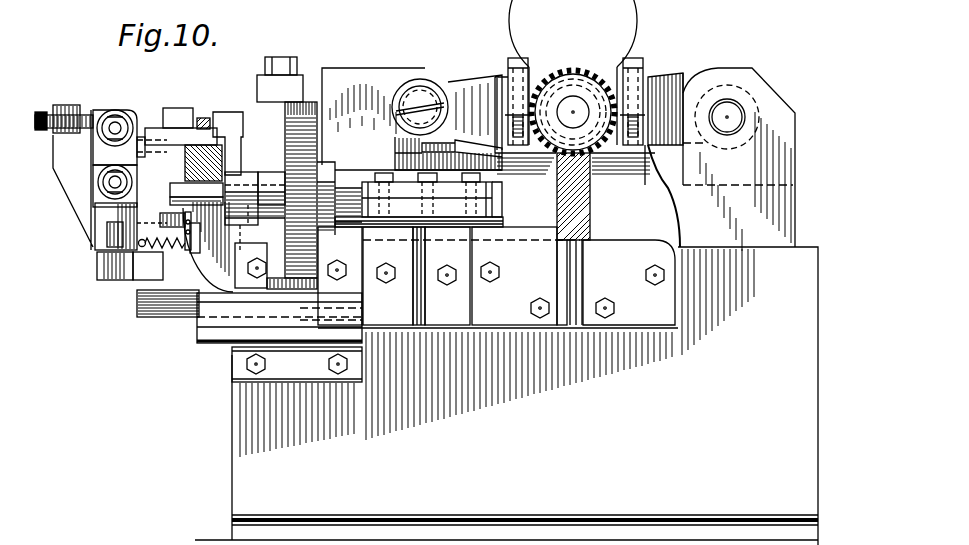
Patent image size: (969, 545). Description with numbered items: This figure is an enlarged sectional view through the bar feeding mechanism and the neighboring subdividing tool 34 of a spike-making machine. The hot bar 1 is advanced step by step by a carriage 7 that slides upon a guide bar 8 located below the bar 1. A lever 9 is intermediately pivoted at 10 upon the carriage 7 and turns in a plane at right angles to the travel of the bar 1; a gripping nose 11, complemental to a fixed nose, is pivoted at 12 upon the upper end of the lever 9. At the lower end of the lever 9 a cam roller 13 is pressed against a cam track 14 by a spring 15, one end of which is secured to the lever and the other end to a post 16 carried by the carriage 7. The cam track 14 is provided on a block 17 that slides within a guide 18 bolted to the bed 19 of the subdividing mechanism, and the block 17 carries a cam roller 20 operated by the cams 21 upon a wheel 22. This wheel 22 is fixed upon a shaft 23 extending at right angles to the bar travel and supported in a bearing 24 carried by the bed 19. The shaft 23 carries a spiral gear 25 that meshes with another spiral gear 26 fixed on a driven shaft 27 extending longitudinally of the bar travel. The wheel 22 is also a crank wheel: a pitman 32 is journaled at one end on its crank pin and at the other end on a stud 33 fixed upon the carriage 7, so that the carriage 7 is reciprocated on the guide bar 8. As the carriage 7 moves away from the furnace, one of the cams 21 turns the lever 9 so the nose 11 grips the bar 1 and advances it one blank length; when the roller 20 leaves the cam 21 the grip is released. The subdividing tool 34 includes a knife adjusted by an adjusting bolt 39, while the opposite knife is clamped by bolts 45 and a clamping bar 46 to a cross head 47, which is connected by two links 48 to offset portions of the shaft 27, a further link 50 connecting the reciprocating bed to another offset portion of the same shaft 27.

The bar 1 is at (203, 117).
The carriage 7 is at (113, 207).
The guide bar 8 is at (216, 185).
The lever 9 is at (103, 152).
The pivot 10 is at (110, 185).
The gripping nose 11 is at (183, 108).
The pivot 12 is at (111, 110).
The cam roller 13 is at (97, 263).
The cam track 14 is at (137, 280).
The spring 15 is at (173, 250).
The post 16 is at (195, 244).
The block 17 is at (197, 318).
The guide 18 is at (192, 330).
The bed 19 is at (250, 478).
The cam roller 20 is at (267, 285).
The cams 21 is at (313, 235).
The wheel 22 is at (317, 140).
The shaft 23 is at (592, 190).
The bearing 24 is at (358, 170).
The spiral gear 25 is at (553, 252).
The spiral gear 26 is at (592, 78).
The shaft 27 is at (568, 100).
The pitman 32 is at (270, 190).
The stud 33 is at (251, 265).
The subdividing tool 34 is at (68, 106).
The adjusting bolt 39 is at (45, 112).
The bolts 45 is at (280, 57).
The clamping bar 46 is at (280, 88).
The cross head 47 is at (372, 82).
The links 48 is at (457, 80).
The link 50 is at (662, 84).